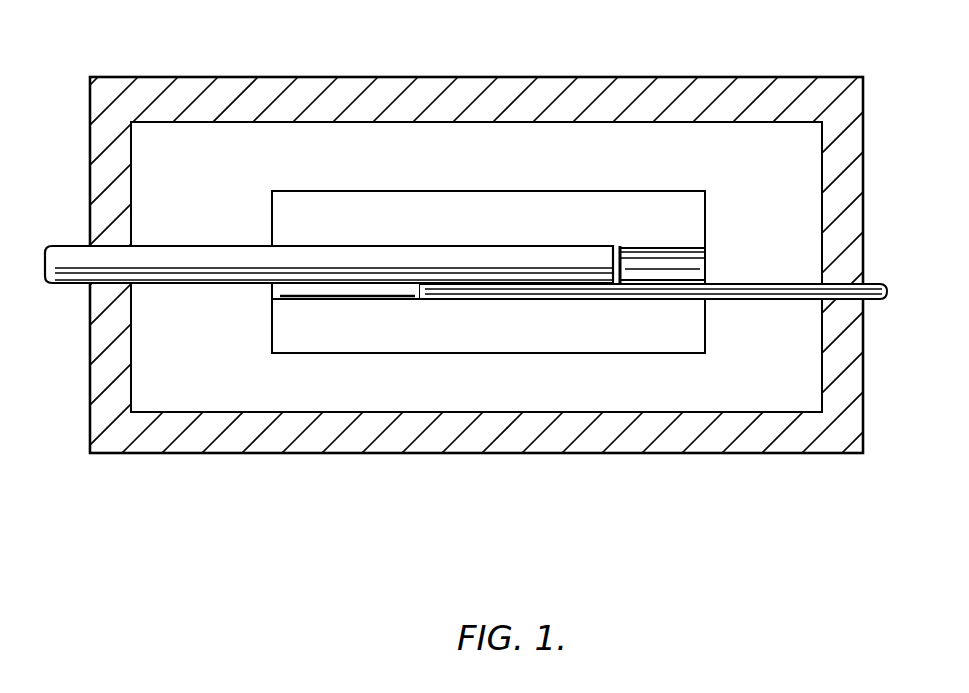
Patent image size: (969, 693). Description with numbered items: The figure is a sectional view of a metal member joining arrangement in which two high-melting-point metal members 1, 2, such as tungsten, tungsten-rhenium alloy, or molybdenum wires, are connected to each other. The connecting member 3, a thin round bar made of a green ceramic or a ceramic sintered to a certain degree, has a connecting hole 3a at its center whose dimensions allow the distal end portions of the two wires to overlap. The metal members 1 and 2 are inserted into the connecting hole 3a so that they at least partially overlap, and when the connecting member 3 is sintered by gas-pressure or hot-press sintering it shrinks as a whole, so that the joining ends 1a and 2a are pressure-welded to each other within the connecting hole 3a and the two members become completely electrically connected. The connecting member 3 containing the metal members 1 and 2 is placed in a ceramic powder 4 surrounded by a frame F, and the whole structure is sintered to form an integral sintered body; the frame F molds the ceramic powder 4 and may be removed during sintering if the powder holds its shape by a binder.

The metal member 1 is at (329, 153).
The joining end 1a is at (536, 262).
The metal member 2 is at (874, 290).
The joining end 2a is at (537, 293).
The connecting member 3 is at (466, 205).
The connecting hole 3a is at (679, 250).
The ceramic powder 4 is at (346, 145).
The frame F is at (865, 362).